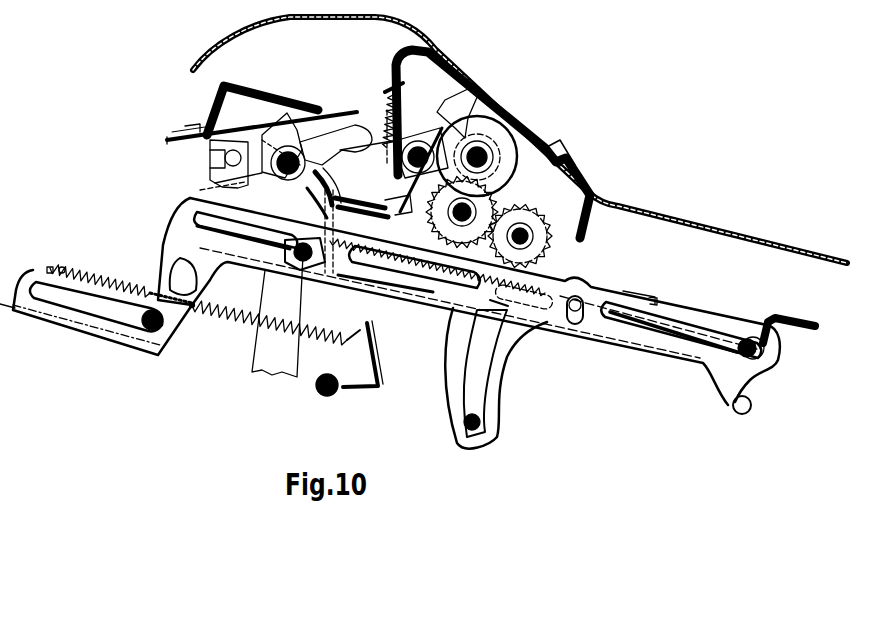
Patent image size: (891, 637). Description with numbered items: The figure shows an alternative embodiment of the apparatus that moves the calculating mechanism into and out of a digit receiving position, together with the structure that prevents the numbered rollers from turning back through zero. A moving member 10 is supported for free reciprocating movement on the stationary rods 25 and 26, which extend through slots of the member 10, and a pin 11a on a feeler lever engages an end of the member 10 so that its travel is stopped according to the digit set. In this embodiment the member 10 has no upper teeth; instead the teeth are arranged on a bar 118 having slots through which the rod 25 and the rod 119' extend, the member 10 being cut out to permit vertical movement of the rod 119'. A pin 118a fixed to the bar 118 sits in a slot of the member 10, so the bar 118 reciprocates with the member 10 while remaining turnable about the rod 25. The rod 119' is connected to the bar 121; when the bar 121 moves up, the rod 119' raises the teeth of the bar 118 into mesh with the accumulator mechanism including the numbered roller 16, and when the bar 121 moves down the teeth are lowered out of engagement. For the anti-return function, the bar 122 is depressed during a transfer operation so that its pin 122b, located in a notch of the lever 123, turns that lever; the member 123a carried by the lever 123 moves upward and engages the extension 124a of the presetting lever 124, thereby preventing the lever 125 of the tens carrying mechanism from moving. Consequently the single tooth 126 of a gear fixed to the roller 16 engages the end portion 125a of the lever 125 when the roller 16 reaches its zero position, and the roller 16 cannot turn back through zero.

The moving member 10 is at (250, 266).
The pin 11a is at (750, 404).
The numbered roller 16 is at (507, 153).
The rod 25 is at (747, 341).
The rod 26 is at (157, 332).
The bar 118 is at (452, 282).
The pin 118a is at (575, 314).
The rod 119' is at (328, 251).
The bar 121 is at (265, 343).
The bar 122 is at (213, 176).
The pin 122b is at (226, 159).
The lever 123 is at (215, 183).
The member 123a is at (345, 213).
The presetting lever 124 is at (262, 141).
The extension 124a is at (333, 166).
The lever 125 is at (323, 140).
The end portion 125a is at (466, 132).
The single tooth 126 is at (470, 140).